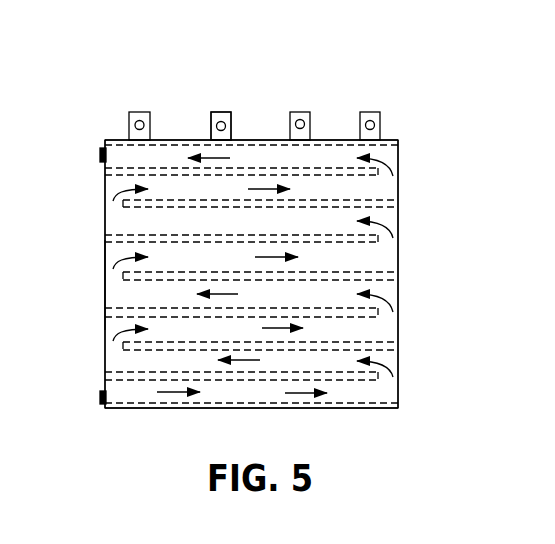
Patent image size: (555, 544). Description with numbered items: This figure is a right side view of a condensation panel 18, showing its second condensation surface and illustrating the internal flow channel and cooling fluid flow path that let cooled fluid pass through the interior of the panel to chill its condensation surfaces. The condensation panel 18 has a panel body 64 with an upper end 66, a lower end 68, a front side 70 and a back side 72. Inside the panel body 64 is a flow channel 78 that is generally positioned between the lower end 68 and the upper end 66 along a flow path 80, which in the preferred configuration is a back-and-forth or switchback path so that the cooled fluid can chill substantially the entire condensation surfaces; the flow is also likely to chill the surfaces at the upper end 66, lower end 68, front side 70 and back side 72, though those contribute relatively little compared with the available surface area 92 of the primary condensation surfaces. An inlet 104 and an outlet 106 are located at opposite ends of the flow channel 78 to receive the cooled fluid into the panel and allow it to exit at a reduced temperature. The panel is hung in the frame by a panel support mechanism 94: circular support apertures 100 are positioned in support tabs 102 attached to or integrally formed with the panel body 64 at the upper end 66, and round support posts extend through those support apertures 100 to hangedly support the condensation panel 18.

The condensation panel 18 is at (268, 102).
The panel body 64 is at (105, 293).
The upper end 66 is at (95, 142).
The lower end 68 is at (99, 410).
The front side 70 is at (104, 135).
The back side 72 is at (398, 135).
The flow channel 78 is at (350, 390).
The flow path 80 is at (175, 395).
The available surface area 92 is at (123, 223).
The panel support mechanism 94 is at (227, 101).
The support aperture 100 is at (301, 124).
The support tab 102 is at (217, 113).
The inlet 104 is at (100, 395).
The outlet 106 is at (100, 158).